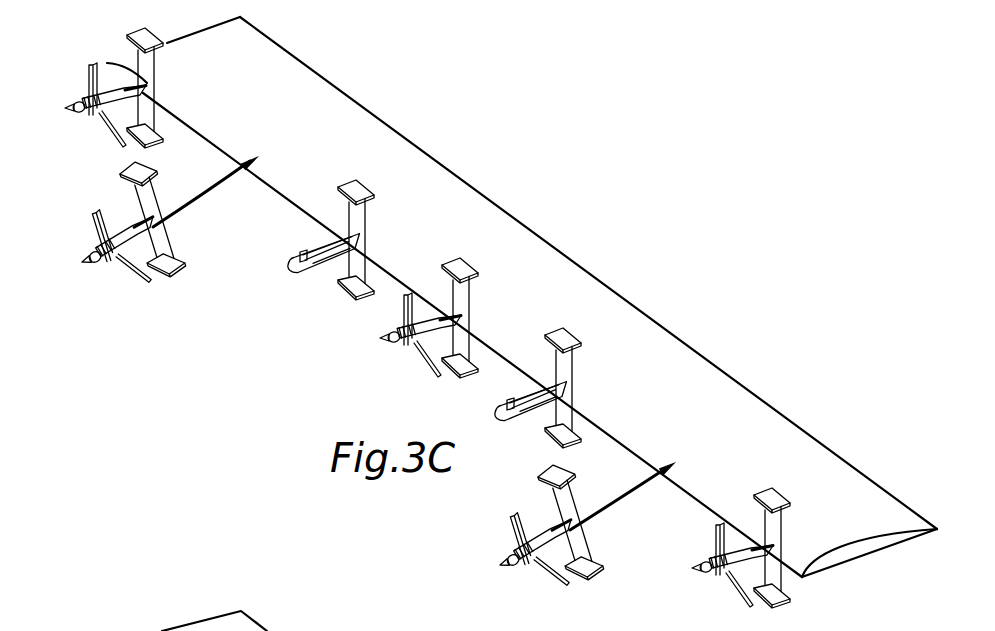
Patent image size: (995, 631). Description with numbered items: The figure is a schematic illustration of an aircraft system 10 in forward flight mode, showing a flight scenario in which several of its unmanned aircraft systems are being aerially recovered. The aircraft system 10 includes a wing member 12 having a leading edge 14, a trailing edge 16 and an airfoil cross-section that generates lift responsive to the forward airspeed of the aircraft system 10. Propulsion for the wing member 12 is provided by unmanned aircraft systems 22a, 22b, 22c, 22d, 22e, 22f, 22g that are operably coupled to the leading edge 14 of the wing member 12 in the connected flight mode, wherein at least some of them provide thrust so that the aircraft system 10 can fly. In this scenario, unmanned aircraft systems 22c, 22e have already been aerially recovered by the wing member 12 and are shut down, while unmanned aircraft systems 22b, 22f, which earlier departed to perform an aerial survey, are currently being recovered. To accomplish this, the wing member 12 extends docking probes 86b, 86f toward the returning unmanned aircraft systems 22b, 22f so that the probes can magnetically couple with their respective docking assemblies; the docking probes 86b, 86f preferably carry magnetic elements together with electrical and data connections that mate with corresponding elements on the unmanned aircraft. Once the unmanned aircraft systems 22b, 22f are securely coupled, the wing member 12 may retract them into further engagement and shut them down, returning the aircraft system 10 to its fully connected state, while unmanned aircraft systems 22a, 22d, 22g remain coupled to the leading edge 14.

The aircraft system 10 is at (601, 247).
The wing member 12 is at (522, 237).
The leading edge 14 is at (400, 283).
The trailing edge 16 is at (458, 174).
The unmanned aircraft system 22a is at (703, 572).
The unmanned aircraft system 22b is at (513, 568).
The unmanned aircraft system 22c is at (498, 417).
The unmanned aircraft system 22d is at (392, 342).
The unmanned aircraft system 22e is at (288, 270).
The unmanned aircraft system 22f is at (97, 264).
The unmanned aircraft system 22g is at (83, 113).
The docking probe 86b is at (629, 490).
The docking probe 86f is at (213, 188).